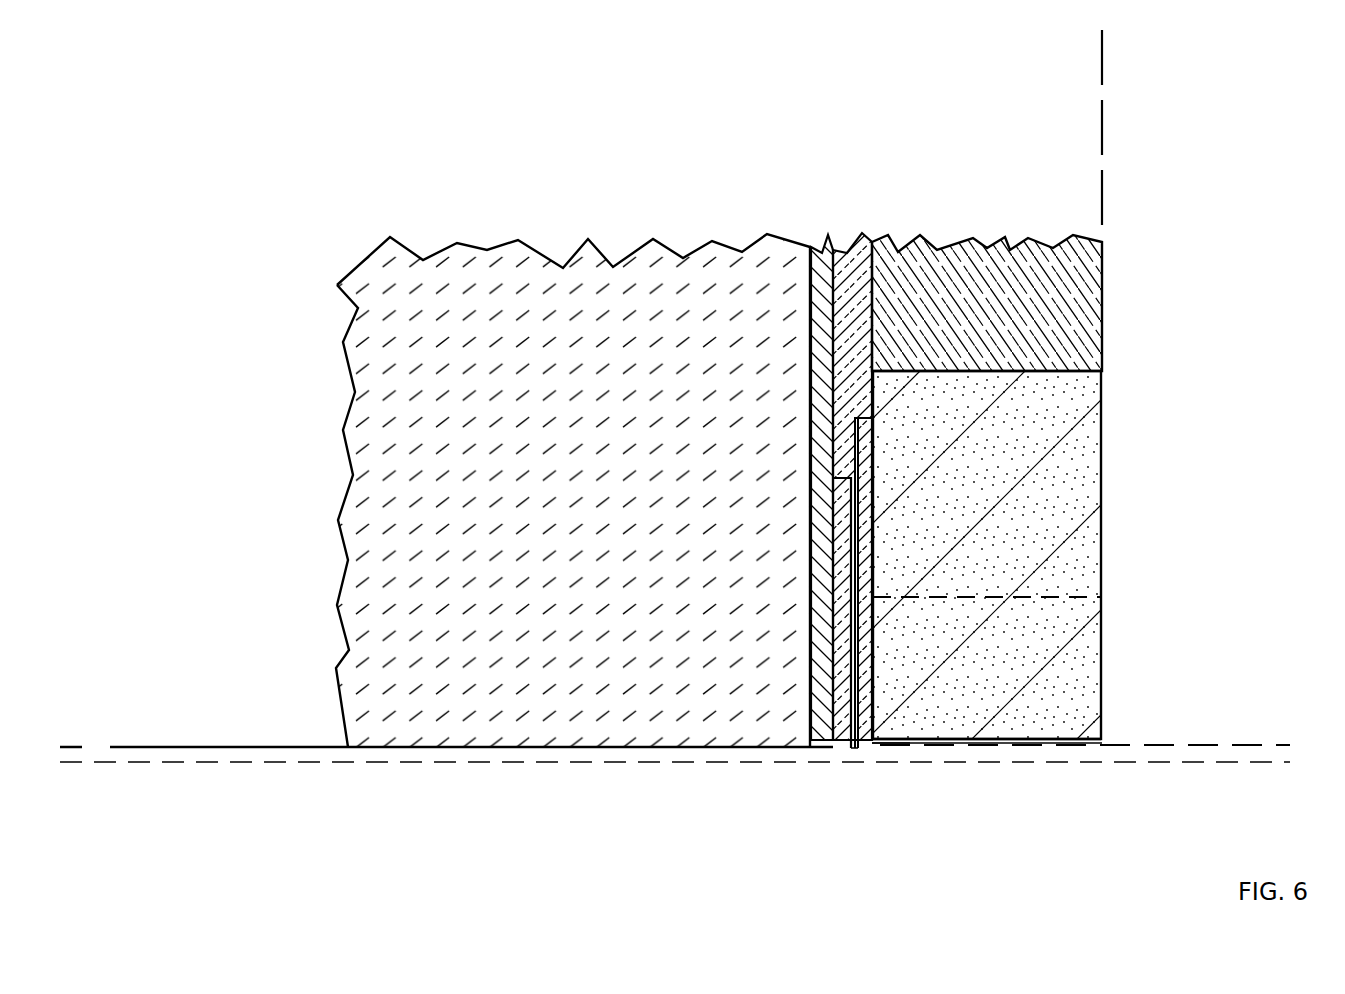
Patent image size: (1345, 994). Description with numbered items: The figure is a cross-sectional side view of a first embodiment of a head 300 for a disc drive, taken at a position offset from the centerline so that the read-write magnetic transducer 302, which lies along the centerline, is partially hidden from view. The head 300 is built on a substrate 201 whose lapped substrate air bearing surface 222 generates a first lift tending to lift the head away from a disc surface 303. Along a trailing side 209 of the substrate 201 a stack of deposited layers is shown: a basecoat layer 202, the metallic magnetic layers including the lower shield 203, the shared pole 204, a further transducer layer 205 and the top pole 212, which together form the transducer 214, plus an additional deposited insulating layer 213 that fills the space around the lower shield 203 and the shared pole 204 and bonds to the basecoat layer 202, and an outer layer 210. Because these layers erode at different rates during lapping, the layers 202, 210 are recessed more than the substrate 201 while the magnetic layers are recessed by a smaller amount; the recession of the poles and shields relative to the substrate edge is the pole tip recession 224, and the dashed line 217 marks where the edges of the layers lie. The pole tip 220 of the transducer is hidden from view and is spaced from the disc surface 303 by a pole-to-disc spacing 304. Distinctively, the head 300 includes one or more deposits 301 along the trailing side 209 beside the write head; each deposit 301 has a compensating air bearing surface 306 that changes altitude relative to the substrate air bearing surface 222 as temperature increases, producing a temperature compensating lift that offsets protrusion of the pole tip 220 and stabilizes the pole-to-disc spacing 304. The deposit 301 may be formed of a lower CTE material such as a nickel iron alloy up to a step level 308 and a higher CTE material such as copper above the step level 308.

The substrate 201 is at (578, 508).
The basecoat layer 202 is at (823, 247).
The lower shield 203 is at (838, 744).
The shared pole 204 is at (863, 748).
The transducer layer 205 is at (853, 773).
The trailing side 209 is at (810, 617).
The layer 210 is at (970, 237).
The top pole 212 is at (910, 745).
The deposited insulating layer 213 is at (847, 247).
The transducer 214 is at (766, 455).
The dashed line 217 is at (1072, 747).
The pole tip 220 is at (887, 762).
The substrate air bearing surface 222 is at (545, 748).
The pole tip recession 224 is at (1134, 772).
The head 300 is at (1217, 276).
The deposit 301 is at (1045, 518).
The read-write magnetic transducer 302 is at (1000, 855).
The disc surface 303 is at (1186, 763).
The pole-to-disc spacing 304 is at (1228, 785).
The compensating air bearing surface 306 is at (1012, 738).
The step level 308 is at (1055, 595).